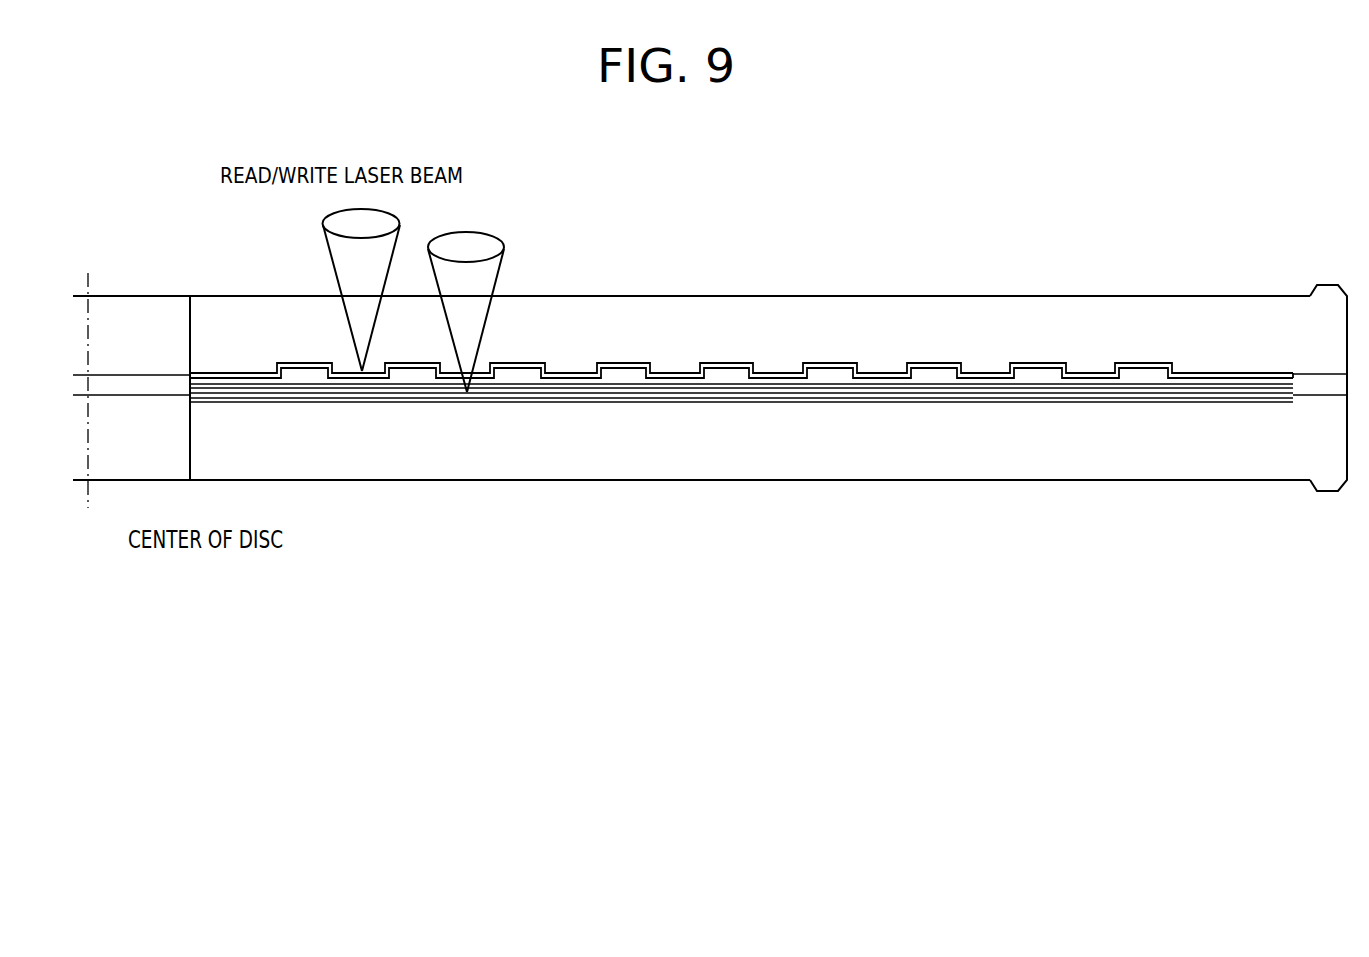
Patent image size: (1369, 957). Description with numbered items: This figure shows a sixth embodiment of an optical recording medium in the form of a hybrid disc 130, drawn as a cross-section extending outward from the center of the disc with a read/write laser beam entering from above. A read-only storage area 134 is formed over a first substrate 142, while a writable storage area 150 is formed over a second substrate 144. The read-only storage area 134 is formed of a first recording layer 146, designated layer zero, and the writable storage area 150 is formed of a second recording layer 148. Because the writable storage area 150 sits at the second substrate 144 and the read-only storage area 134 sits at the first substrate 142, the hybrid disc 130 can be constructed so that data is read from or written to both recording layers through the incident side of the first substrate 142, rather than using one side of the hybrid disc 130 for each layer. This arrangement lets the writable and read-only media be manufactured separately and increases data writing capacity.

The hybrid disc 130 is at (1278, 544).
The read-only storage area 134 is at (1184, 358).
The first substrate 142 is at (893, 322).
The second substrate 144 is at (823, 443).
The first recording layer 146 is at (585, 368).
The second recording layer 148 is at (290, 412).
The writable storage area 150 is at (741, 449).